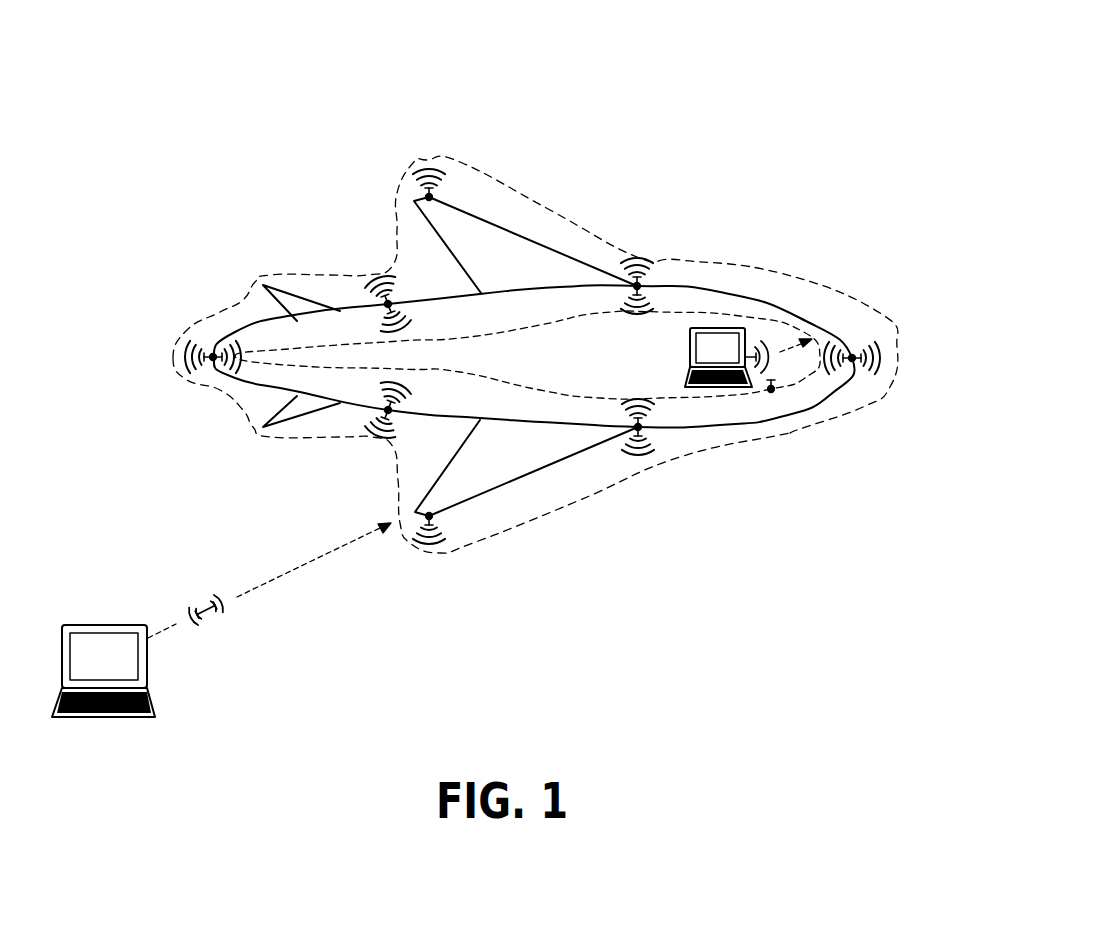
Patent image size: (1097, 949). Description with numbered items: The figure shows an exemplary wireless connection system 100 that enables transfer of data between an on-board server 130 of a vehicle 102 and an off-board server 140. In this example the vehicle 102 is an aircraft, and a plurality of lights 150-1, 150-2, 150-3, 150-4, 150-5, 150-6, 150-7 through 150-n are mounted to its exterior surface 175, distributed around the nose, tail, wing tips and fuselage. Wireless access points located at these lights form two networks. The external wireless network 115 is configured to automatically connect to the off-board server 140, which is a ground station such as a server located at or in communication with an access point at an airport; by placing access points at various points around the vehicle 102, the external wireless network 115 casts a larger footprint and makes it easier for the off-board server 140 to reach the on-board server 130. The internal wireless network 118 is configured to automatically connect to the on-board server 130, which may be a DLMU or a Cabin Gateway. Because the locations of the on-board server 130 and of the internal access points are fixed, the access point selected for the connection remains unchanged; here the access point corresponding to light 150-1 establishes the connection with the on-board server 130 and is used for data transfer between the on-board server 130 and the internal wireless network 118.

The system 100 is at (731, 88).
The vehicle 102 is at (806, 322).
The external wireless network 115 is at (218, 393).
The internal wireless network 118 is at (771, 393).
The on-board server 130 is at (690, 368).
The off-board server 140 is at (117, 623).
The light 150-1 is at (852, 362).
The light 150-2 is at (424, 196).
The light 150-3 is at (389, 300).
The light 150-4 is at (213, 352).
The light 150-5 is at (388, 411).
The light 150-6 is at (436, 517).
The light 150-7 is at (642, 285).
The light 150-n is at (648, 437).
The exterior surface 175 is at (722, 280).